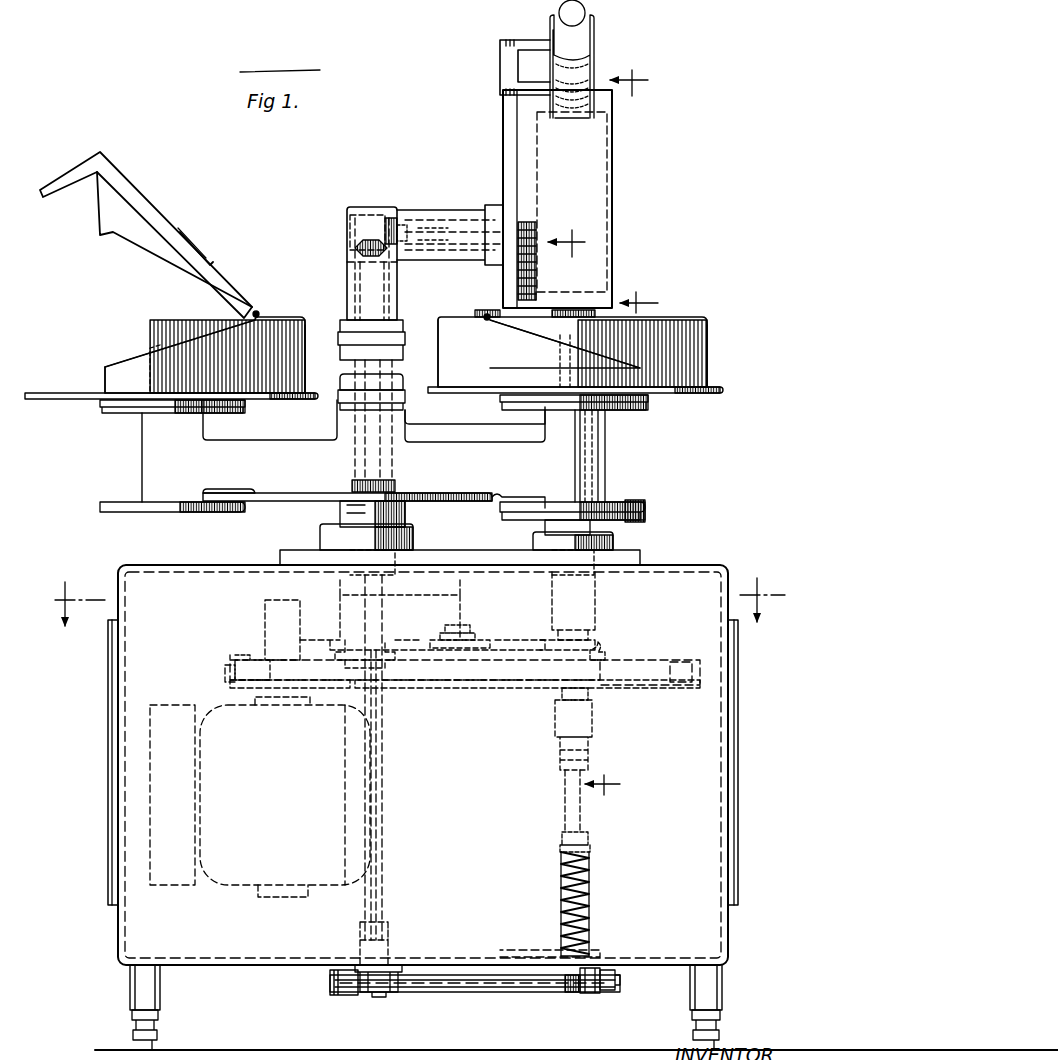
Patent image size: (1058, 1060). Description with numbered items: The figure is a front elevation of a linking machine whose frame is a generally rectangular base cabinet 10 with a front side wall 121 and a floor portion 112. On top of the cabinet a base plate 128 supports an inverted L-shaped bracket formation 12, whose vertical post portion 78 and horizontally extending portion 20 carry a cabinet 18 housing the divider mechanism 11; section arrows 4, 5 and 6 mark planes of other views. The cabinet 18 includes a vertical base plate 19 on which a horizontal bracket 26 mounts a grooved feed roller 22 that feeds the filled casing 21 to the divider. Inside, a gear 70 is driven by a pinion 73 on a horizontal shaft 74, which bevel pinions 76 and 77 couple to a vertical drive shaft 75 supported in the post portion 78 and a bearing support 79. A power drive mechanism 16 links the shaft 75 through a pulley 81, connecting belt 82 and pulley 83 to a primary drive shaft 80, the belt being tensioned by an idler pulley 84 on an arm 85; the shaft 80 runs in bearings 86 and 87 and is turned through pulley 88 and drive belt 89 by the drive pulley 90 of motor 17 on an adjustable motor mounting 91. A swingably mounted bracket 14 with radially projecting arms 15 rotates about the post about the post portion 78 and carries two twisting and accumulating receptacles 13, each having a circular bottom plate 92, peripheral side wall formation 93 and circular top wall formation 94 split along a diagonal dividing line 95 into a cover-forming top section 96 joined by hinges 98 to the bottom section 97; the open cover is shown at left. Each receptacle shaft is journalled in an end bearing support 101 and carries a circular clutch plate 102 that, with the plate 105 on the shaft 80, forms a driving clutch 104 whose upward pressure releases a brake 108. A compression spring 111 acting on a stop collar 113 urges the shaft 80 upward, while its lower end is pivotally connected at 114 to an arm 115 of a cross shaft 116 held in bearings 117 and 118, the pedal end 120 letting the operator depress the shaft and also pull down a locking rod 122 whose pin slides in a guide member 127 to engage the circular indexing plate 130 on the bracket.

The section line 4- 4 is at (409, 602).
The section line 5- 5 is at (584, 503).
The section line 6- 6 is at (629, 70).
The base cabinet 10 is at (702, 565).
The divider mechanism 11 is at (616, 177).
The inverted L-shaped bracket formation 12 is at (365, 210).
The twisting and accumulating receptacle 13 is at (270, 320).
The swingably mounted bracket 14 is at (410, 440).
The radially projecting arm 15 is at (248, 445).
The power drive mechanism 16 is at (473, 622).
The motor 17 is at (228, 885).
The cabinet 18 is at (606, 130).
The vertical base plate 19 is at (508, 128).
The horizontally extending portion 20 is at (468, 210).
The filled casing 21 is at (558, 13).
The grooved feed roller 22 is at (597, 34).
The horizontal bracket 26 is at (502, 66).
The gear 70 is at (540, 278).
The pinion 73 is at (536, 225).
The horizontal shaft 74 is at (438, 228).
The vertical drive shaft 75 is at (398, 320).
The bevel pinion 76 is at (395, 222).
The bevel pinion 77 is at (365, 245).
The vertical post portion 78 is at (346, 300).
The bearing support 79 is at (405, 582).
The primary drive shaft 80 is at (595, 690).
The pulley 81 is at (345, 660).
The connecting belt 82 is at (507, 642).
The pulley 83 is at (600, 640).
The idler pulley 84 is at (455, 625).
The arm 85 is at (410, 618).
The bearing 86 is at (556, 728).
The bearing 87 is at (595, 590).
The pulley 88 is at (660, 660).
The drive belt 89 is at (420, 682).
The drive pulley 90 is at (245, 660).
The adjustable motor mounting 91 is at (168, 712).
The circular bottom plate 92 is at (60, 393).
The peripheral side wall formation 93 is at (306, 355).
The circular top wall formation 94 is at (160, 212).
The dividing line 95 is at (165, 352).
The top section 96 is at (118, 188).
The bottom section 97 is at (125, 360).
The hinge 98 is at (256, 311).
The end bearing support 101 is at (600, 437).
The circular clutch plate 102 is at (226, 508).
The driving clutch 104 is at (645, 506).
The circular clutch plate 105 is at (640, 515).
The brake 108 is at (650, 400).
The compression spring 111 is at (596, 878).
The floor portion 112 is at (650, 960).
The stop collar 113 is at (592, 842).
The pivotal connection 114 is at (560, 978).
The arm 115 is at (568, 993).
The cross shaft 116 is at (472, 988).
The bearing 117 is at (342, 993).
The bearing 118 is at (600, 993).
The pedal end 120 is at (382, 993).
The front side wall 121 is at (480, 894).
The locking rod 122 is at (384, 830).
The guide member 127 is at (357, 515).
The base plate 128 is at (312, 553).
The circular indexing plate 130 is at (434, 492).